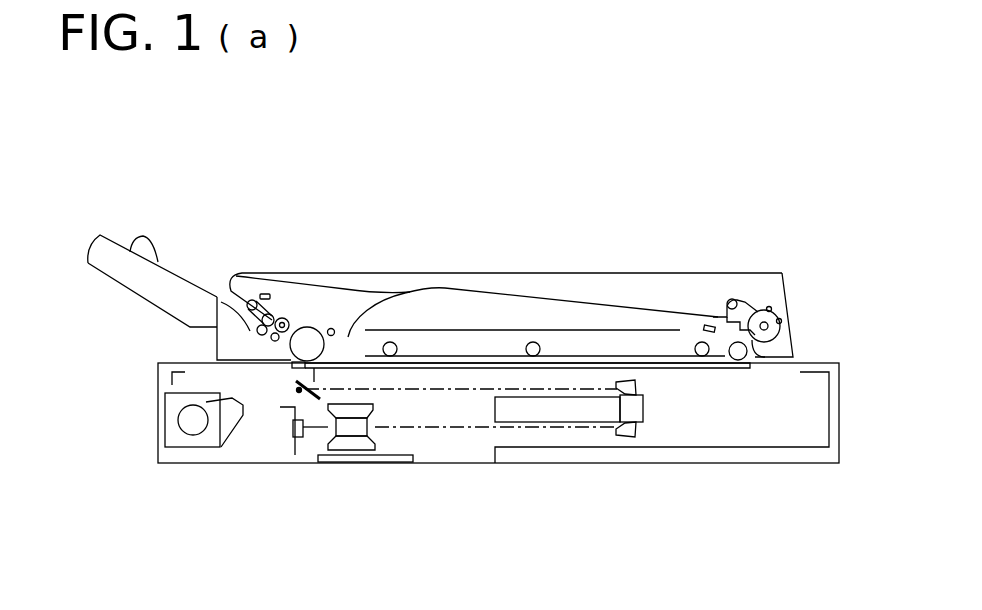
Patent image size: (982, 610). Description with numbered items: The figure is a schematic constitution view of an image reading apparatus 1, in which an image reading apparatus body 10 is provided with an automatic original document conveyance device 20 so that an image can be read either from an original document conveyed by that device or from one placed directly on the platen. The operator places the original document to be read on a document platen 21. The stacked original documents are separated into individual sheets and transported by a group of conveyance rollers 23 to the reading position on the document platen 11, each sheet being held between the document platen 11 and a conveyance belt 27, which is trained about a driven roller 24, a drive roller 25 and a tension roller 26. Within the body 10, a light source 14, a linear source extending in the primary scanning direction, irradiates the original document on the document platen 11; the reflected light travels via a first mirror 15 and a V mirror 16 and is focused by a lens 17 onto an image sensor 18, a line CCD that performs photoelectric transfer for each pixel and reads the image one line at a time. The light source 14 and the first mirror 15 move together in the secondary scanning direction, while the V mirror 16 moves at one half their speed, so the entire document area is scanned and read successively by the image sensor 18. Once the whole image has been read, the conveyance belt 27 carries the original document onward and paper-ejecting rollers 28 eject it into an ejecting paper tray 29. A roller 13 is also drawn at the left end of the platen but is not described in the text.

The image reading apparatus 1 is at (797, 241).
The image reading apparatus body 10 is at (840, 397).
The document platen 11 is at (723, 376).
The roller 13 is at (290, 367).
The light source 14 is at (291, 390).
The first mirror 15 is at (331, 437).
The V mirror 16 is at (641, 393).
The lens 17 is at (370, 432).
The image sensor 18 is at (309, 437).
The automatic original document conveyance device 20 is at (566, 273).
The document platen 21 is at (130, 280).
The group of conveyance rollers 23 is at (278, 300).
The driven roller 24 is at (306, 328).
The drive roller 25 is at (704, 327).
The tension roller 26 is at (334, 329).
The conveyance belt 27 is at (350, 334).
The paper-ejecting rollers 28 is at (756, 293).
The ejecting paper tray 29 is at (493, 279).